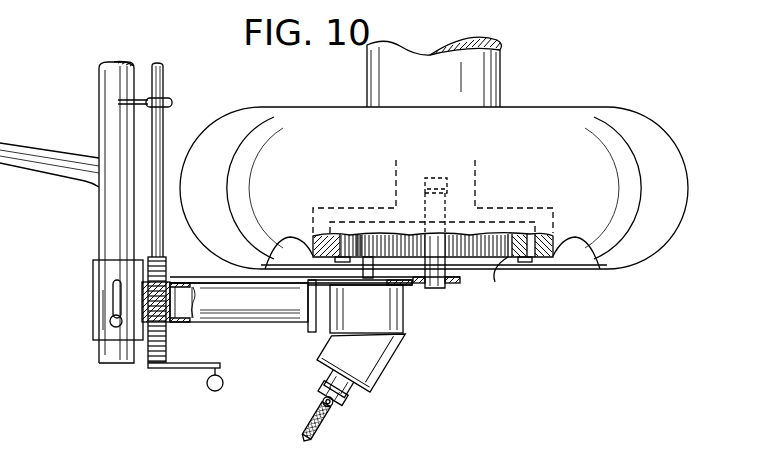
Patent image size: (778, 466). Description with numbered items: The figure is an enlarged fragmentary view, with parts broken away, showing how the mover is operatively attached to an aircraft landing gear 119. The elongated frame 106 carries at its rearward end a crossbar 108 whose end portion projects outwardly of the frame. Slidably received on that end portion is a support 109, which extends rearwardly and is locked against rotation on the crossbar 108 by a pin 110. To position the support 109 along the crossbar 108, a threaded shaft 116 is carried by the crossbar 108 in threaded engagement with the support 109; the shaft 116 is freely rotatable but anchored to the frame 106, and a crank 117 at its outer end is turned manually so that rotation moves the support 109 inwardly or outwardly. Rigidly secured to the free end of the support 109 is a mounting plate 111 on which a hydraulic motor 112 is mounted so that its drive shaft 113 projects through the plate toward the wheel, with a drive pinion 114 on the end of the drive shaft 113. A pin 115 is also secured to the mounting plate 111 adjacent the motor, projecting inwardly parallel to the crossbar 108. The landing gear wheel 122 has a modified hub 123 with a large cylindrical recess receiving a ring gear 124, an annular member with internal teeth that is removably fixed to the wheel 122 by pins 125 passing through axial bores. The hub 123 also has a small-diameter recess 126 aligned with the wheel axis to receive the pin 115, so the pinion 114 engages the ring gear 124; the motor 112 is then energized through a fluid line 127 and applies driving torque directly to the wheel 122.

The frame 106 is at (62, 178).
The crossbar 108 is at (103, 83).
The support 109 is at (262, 312).
The pin 110 is at (112, 320).
The mounting plate 111 is at (248, 278).
The hydraulic motor 112 is at (383, 343).
The drive shaft 113 is at (367, 258).
The drive pinion 114 is at (362, 234).
The pin 115 is at (442, 288).
The shaft 116 is at (164, 80).
The crank 117 is at (183, 368).
The landing gear 119 is at (485, 63).
The wheel 122 is at (672, 184).
The modified hub 123 is at (563, 221).
The ring gear 124 is at (511, 278).
The pin 125 is at (333, 252).
The recess 126 is at (437, 178).
The fluid line 127 is at (337, 418).